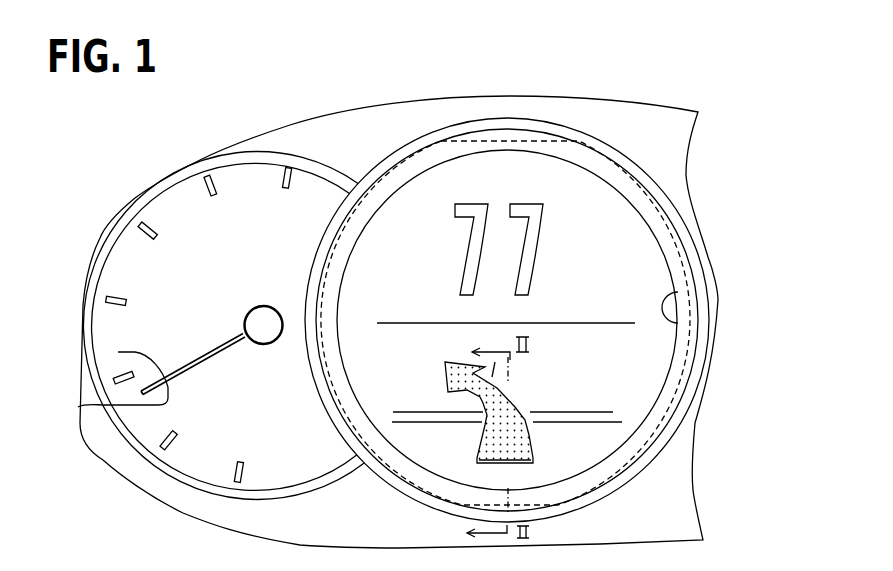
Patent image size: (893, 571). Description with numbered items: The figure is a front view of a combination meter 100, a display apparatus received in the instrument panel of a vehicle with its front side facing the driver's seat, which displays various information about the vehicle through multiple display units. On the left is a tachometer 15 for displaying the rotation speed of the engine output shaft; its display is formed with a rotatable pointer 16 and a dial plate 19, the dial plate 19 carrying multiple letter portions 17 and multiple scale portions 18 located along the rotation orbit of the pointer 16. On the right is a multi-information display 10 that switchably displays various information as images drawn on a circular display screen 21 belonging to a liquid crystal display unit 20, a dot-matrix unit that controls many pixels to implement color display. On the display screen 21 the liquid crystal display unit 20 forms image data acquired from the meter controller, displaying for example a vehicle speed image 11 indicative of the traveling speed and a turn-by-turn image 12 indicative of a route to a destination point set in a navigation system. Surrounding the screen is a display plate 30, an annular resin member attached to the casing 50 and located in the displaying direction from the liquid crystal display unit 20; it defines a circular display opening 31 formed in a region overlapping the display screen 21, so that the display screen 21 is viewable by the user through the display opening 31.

The combination meter 100 is at (673, 102).
The casing 50 is at (167, 172).
The tachometer 15 is at (157, 210).
The dial plate 19 is at (162, 283).
The scale portions 18 is at (113, 307).
The letter portions 17 is at (118, 352).
The pointer 16 is at (78, 407).
The multi-information display 10 is at (622, 202).
The display plate 30 is at (677, 257).
The display opening 31 is at (670, 297).
The liquid crystal display unit 20 is at (517, 141).
The display screen 21 is at (577, 182).
The vehicle speed image 11 is at (585, 237).
The turn-by-turn image 12 is at (642, 372).